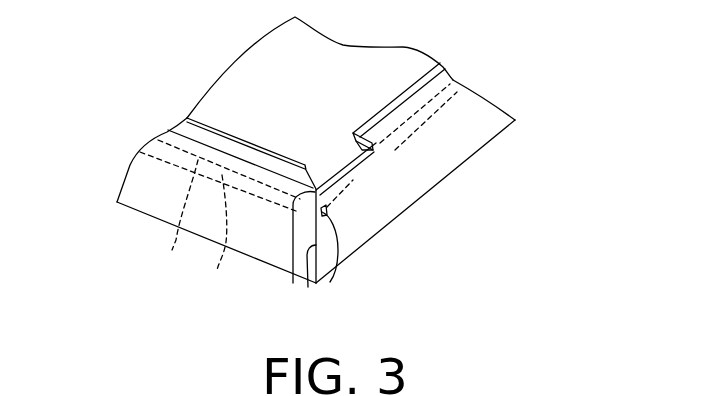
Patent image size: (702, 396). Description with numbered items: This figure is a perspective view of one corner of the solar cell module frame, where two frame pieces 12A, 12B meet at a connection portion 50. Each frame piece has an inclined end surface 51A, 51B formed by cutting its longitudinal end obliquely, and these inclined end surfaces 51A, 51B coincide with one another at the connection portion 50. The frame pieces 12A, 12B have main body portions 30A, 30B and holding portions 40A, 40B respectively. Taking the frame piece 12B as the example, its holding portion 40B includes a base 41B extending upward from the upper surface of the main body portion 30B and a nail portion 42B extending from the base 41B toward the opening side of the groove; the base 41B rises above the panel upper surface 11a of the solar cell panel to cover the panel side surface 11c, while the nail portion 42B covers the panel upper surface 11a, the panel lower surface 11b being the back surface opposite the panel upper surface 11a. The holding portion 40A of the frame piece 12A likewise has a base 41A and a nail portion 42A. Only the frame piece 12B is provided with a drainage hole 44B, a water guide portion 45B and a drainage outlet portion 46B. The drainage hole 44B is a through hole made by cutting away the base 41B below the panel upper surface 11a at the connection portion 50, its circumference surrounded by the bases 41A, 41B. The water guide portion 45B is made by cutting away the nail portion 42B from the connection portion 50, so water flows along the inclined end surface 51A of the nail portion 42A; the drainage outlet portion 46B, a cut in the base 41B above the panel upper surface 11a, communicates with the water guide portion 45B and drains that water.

The panel upper surface 11a is at (303, 57).
The panel lower surface 11b is at (218, 221).
The panel side surface 11c is at (229, 205).
The frame piece 12A is at (141, 196).
The frame piece 12B is at (460, 145).
The main body portion 30A is at (134, 170).
The main body portion 30B is at (490, 122).
The holding portion 40A is at (198, 60).
The base 41A is at (168, 131).
The nail portion 42A is at (188, 120).
The holding portion 40B is at (539, 45).
The base 41B is at (457, 88).
The nail portion 42B is at (447, 62).
The drainage hole 44B is at (338, 249).
The water guide portion 45B is at (333, 160).
The drainage outlet portion 46B is at (374, 160).
The connection portion 50 is at (313, 232).
The inclined end surface 51A is at (315, 188).
The inclined end surface 51B is at (300, 237).